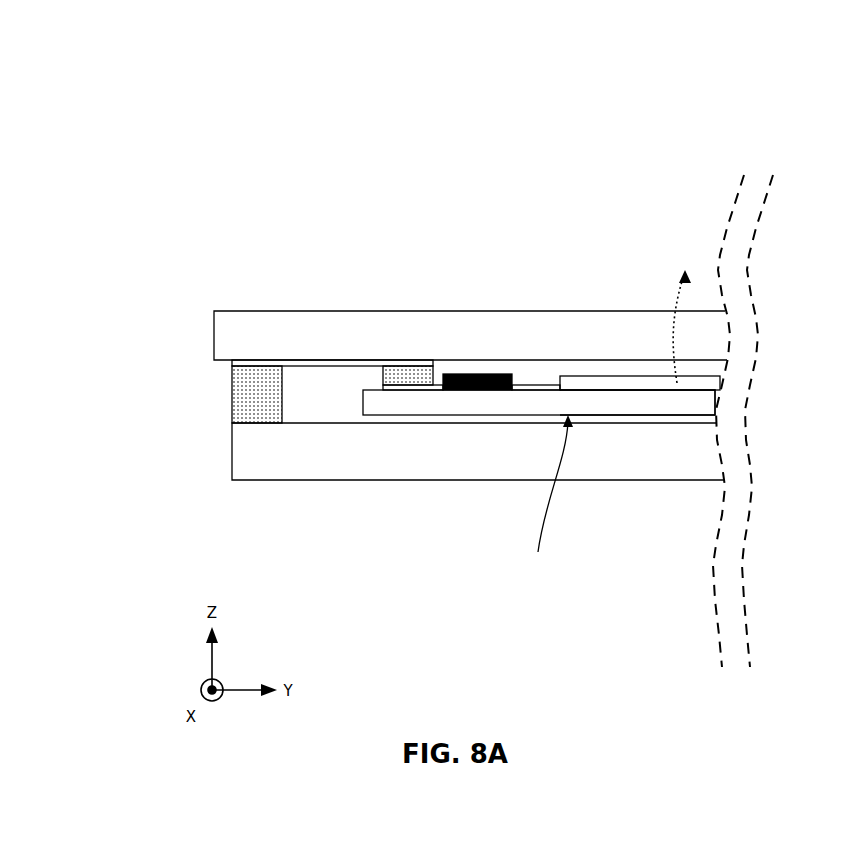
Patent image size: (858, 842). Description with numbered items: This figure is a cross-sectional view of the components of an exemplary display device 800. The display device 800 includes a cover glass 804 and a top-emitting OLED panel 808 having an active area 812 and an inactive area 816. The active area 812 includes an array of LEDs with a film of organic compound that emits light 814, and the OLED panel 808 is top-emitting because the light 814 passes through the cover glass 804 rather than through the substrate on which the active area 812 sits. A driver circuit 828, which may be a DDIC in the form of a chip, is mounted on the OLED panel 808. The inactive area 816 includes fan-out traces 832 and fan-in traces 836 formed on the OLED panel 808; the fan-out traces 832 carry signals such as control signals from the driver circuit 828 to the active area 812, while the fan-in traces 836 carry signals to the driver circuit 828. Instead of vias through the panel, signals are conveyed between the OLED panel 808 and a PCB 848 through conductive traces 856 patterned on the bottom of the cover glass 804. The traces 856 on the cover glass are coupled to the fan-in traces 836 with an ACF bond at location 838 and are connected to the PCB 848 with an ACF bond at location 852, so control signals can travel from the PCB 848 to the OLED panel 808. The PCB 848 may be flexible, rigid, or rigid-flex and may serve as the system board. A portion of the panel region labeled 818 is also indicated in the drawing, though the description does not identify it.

The display device 800 is at (182, 126).
The cover glass 804 is at (259, 311).
The top-emitting OLED panel 808 is at (550, 500).
The active area 812 is at (630, 386).
The light 814 is at (682, 312).
The inactive area 816 is at (478, 400).
The substrate portion 818 is at (668, 401).
The driver circuit 828 is at (480, 374).
The fan-out traces 832 is at (531, 388).
The fan-in traces 836 is at (412, 390).
The ACF bond location 838 is at (401, 377).
The PCB 848 is at (350, 480).
The ACF bond location 852 is at (250, 397).
The traces on cover glass 856 is at (316, 362).